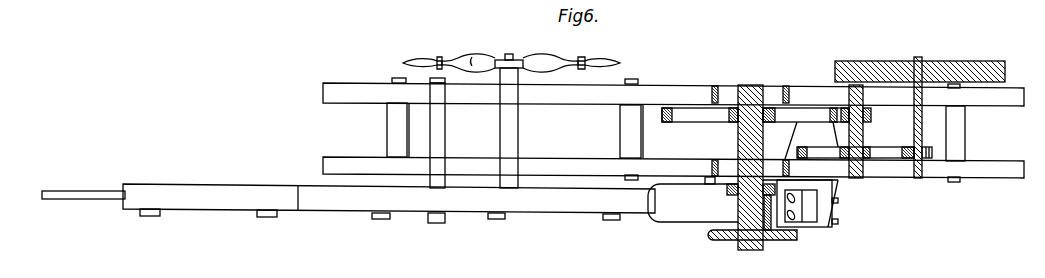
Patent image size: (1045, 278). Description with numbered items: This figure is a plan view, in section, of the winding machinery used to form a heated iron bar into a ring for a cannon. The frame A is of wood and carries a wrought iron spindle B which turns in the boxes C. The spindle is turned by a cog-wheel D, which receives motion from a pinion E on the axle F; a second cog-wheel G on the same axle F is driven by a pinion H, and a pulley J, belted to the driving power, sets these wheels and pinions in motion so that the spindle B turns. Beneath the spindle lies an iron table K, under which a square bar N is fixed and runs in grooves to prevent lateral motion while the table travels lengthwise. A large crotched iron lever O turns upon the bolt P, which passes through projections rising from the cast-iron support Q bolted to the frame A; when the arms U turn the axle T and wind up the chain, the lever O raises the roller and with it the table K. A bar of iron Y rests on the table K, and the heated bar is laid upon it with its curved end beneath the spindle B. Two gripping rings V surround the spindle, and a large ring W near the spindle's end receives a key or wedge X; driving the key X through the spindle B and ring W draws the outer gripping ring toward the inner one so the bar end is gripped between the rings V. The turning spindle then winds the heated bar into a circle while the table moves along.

The frame A is at (673, 130).
The spindle B is at (750, 167).
The boxes C is at (750, 131).
The cog-wheel D is at (755, 115).
The pinion E is at (873, 115).
The axle F is at (890, 117).
The cog-wheel G is at (855, 152).
The pinion H is at (930, 145).
The pulley J is at (434, 135).
The iron table K is at (389, 206).
The square bar N is at (83, 188).
The crotched bar or lever O is at (788, 206).
The bolt P is at (800, 203).
The support Q is at (811, 140).
The axle T is at (509, 128).
The arms U is at (511, 56).
The gripping rings V is at (748, 212).
The large ring W is at (752, 242).
The key or wedge X is at (920, 71).
The bar of iron Y is at (677, 199).